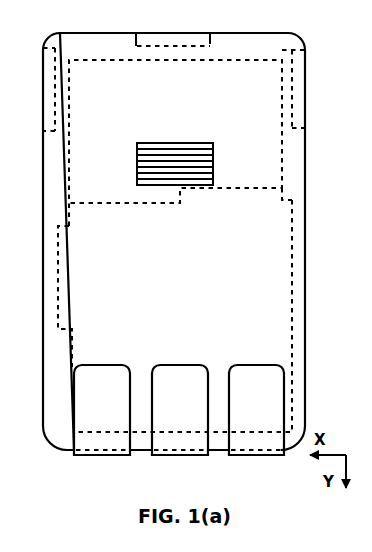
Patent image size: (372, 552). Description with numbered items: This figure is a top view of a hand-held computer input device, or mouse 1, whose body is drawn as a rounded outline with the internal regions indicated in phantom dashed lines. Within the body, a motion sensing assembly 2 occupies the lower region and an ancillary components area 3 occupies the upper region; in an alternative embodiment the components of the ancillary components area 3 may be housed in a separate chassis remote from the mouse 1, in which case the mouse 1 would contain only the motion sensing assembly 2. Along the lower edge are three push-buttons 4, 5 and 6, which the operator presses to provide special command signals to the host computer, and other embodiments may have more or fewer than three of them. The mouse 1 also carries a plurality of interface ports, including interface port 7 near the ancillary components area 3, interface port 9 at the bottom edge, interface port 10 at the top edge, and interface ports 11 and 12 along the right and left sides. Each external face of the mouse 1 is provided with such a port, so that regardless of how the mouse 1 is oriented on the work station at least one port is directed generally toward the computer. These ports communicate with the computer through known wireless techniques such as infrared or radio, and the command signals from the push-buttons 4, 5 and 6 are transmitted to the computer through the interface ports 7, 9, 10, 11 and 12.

The mouse 1 is at (313, 180).
The motion sensing assembly 2 is at (299, 393).
The ancillary components area 3 is at (282, 145).
The push-button 4 is at (88, 457).
The push-button 5 is at (182, 366).
The push-button 6 is at (254, 364).
The interface port 7 is at (180, 142).
The interface port 9 is at (213, 448).
The interface port 10 is at (157, 50).
The interface port 11 is at (300, 81).
The interface port 12 is at (48, 106).